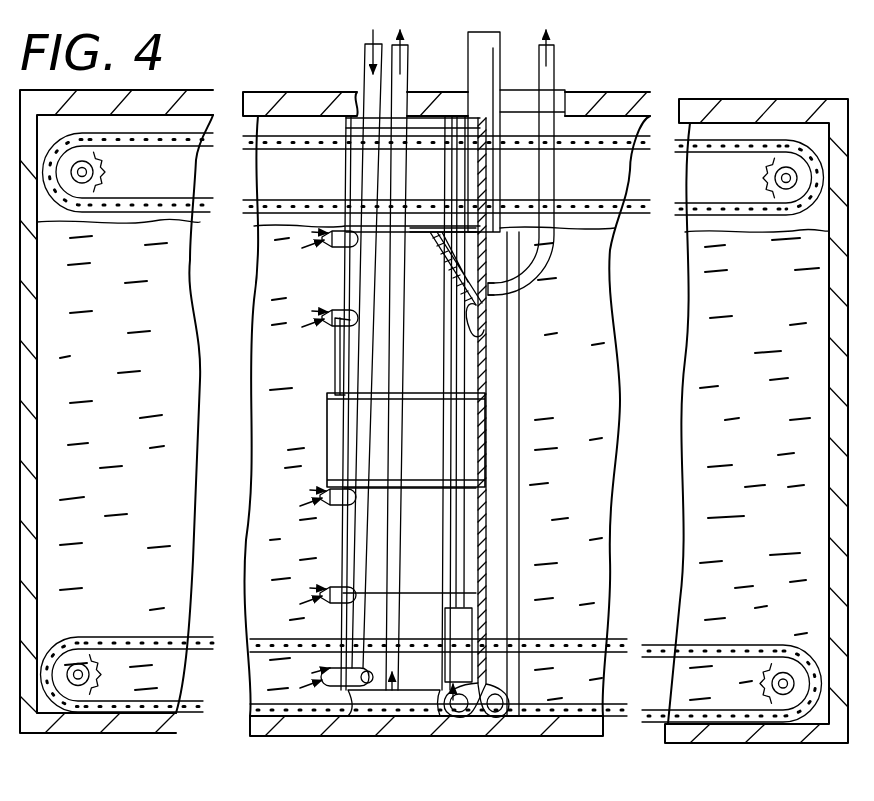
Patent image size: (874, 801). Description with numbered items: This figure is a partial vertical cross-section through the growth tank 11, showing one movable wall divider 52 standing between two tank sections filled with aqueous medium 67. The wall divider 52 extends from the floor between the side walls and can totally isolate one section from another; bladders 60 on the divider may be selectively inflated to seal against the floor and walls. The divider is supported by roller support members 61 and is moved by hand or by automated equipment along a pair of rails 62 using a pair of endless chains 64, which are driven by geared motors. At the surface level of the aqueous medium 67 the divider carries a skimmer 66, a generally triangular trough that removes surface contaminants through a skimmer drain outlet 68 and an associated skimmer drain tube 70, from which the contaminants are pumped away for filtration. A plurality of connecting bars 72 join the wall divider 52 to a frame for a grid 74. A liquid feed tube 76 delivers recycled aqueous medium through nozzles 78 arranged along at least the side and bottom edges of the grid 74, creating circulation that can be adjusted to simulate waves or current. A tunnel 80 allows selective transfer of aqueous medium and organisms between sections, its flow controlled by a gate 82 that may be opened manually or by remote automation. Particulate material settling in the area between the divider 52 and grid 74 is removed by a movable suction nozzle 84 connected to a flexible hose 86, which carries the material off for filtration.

The growth tank 11 is at (776, 88).
The wall divider 52 is at (483, 504).
The bladder 60 is at (498, 377).
The roller support member 61 is at (530, 100).
The rail 62 is at (716, 106).
The endless chain 64 is at (184, 157).
The skimmer 66 is at (473, 322).
The aqueous medium 67 is at (772, 297).
The skimmer drain outlet 68 is at (500, 298).
The skimmer drain tube 70 is at (553, 180).
The connecting bar 72 is at (415, 152).
The grid 74 is at (343, 547).
The liquid feed tube 76 is at (365, 47).
The nozzle 78 is at (353, 326).
The tunnel 80 is at (452, 461).
The gate 82 is at (333, 372).
The suction nozzle 84 is at (423, 700).
The flexible hose 86 is at (400, 89).